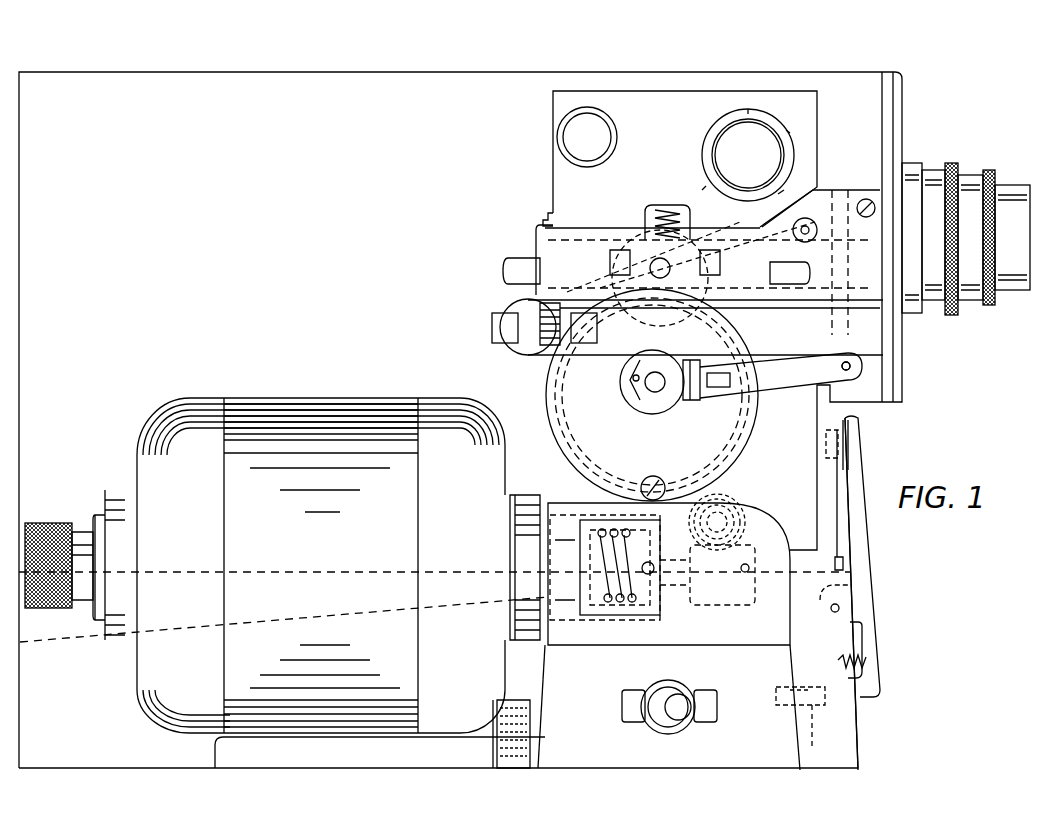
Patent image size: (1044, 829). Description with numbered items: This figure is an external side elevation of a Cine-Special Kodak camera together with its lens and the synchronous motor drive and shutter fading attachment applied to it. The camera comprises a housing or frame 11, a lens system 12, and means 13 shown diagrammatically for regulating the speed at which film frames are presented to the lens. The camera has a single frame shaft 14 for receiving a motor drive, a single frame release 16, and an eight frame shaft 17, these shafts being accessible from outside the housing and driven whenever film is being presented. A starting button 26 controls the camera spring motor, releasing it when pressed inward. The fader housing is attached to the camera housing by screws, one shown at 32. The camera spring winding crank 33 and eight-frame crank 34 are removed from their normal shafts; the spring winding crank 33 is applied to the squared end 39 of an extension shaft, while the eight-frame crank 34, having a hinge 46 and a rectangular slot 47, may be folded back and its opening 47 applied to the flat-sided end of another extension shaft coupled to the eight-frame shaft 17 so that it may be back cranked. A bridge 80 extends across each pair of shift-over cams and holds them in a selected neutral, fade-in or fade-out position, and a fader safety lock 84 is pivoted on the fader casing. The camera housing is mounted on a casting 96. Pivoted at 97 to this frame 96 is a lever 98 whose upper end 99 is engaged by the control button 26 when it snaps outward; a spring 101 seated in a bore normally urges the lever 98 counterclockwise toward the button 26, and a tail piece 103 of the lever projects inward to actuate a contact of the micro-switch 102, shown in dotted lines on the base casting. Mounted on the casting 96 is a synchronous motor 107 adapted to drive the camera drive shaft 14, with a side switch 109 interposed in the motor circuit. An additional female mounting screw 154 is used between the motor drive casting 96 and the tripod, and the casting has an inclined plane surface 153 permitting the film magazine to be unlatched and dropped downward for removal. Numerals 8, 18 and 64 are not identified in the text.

The housing or frame 11 is at (460, 420).
The lens system 12 is at (972, 178).
The speed regulating means 13 is at (752, 137).
The single frame shaft 14 is at (725, 508).
The single frame release 16 is at (749, 104).
The camera front panel 8 is at (792, 127).
The screw 32 is at (707, 194).
The cam 64 is at (781, 202).
The eight frame shaft 17 is at (655, 395).
The pivot pin 18 is at (839, 365).
The starting button 26 is at (845, 462).
The spring winding crank 33 is at (606, 352).
The eight-frame crank 34 is at (790, 372).
The squared end 39 is at (492, 325).
The hinge 46 is at (688, 400).
The rectangular slot 47 is at (720, 388).
The bridge 80 is at (690, 252).
The fader safety lock 84 is at (550, 213).
The casting 96 is at (858, 758).
The pivot 97 is at (833, 613).
The lever 98 is at (868, 605).
The upper end 99 is at (862, 437).
The spring 101 is at (866, 660).
The micro-switch 102 is at (833, 738).
The tail piece 103 is at (845, 700).
The synchronous motor 107 is at (262, 398).
The side switch 109 is at (682, 722).
The inclined plane surface 153 is at (60, 645).
The female mounting screw 154 is at (510, 768).